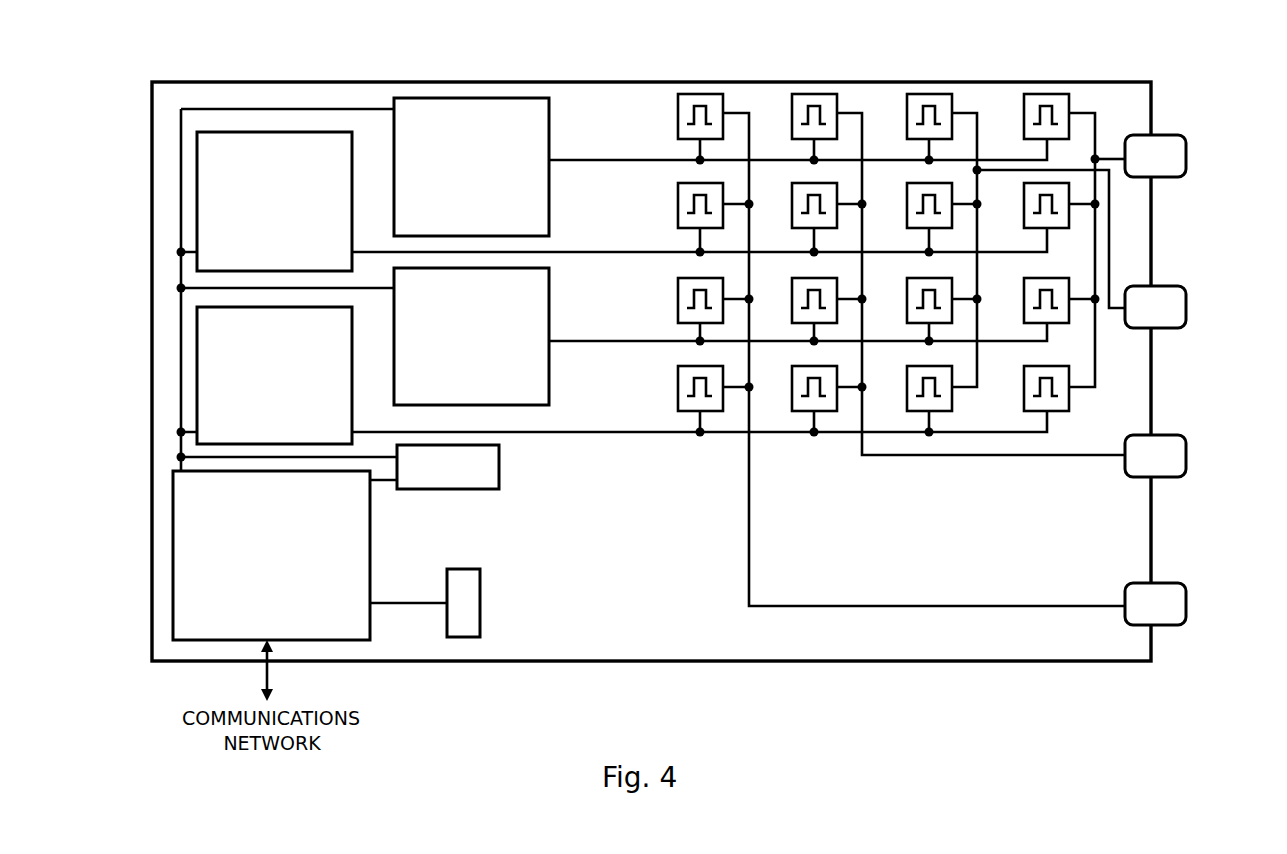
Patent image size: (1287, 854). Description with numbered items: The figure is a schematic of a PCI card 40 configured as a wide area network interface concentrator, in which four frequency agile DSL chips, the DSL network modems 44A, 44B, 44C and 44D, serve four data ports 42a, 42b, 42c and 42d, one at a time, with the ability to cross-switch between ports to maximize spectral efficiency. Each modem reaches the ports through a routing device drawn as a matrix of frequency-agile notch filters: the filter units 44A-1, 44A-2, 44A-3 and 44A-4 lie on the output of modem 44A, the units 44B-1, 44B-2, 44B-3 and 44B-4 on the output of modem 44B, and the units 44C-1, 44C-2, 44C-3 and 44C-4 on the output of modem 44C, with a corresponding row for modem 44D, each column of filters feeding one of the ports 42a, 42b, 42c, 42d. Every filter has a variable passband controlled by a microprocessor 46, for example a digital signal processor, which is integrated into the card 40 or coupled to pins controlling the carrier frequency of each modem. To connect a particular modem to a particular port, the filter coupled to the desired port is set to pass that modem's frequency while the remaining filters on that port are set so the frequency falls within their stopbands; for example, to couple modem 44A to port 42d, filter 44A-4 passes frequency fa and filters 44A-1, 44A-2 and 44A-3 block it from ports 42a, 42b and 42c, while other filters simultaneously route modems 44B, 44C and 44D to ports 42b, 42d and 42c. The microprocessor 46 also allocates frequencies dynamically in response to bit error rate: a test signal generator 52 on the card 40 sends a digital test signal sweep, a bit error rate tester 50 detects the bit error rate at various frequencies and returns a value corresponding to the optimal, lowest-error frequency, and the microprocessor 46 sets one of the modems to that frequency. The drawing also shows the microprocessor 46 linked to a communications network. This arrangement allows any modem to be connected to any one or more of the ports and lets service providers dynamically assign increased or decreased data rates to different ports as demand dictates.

The PCI card 40 is at (146, 377).
The data port 42a is at (1163, 597).
The data port 42b is at (1163, 447).
The data port 42c is at (1164, 298).
The data port 42d is at (1165, 148).
The DSL network modem 44A is at (264, 391).
The DSL network modem 44B is at (500, 352).
The DSL network modem 44C is at (264, 216).
The DSL network modem 44D is at (463, 179).
The pulse unit 44A-1 is at (698, 405).
The pulse unit 44A-2 is at (813, 405).
The pulse unit 44A-3 is at (925, 405).
The pulse unit 44A-4 is at (1042, 405).
The pulse unit 44B-1 is at (677, 300).
The pulse unit 44B-2 is at (792, 300).
The pulse unit 44B-3 is at (907, 300).
The pulse unit 44B-4 is at (1024, 300).
The pulse unit 44C-1 is at (677, 205).
The pulse unit 44C-2 is at (792, 205).
The pulse unit 44C-3 is at (907, 205).
The pulse unit 44C-4 is at (1024, 205).
The microprocessor 46 is at (281, 561).
The bit error rate tester 50 is at (452, 614).
The test signal generator 52 is at (460, 479).